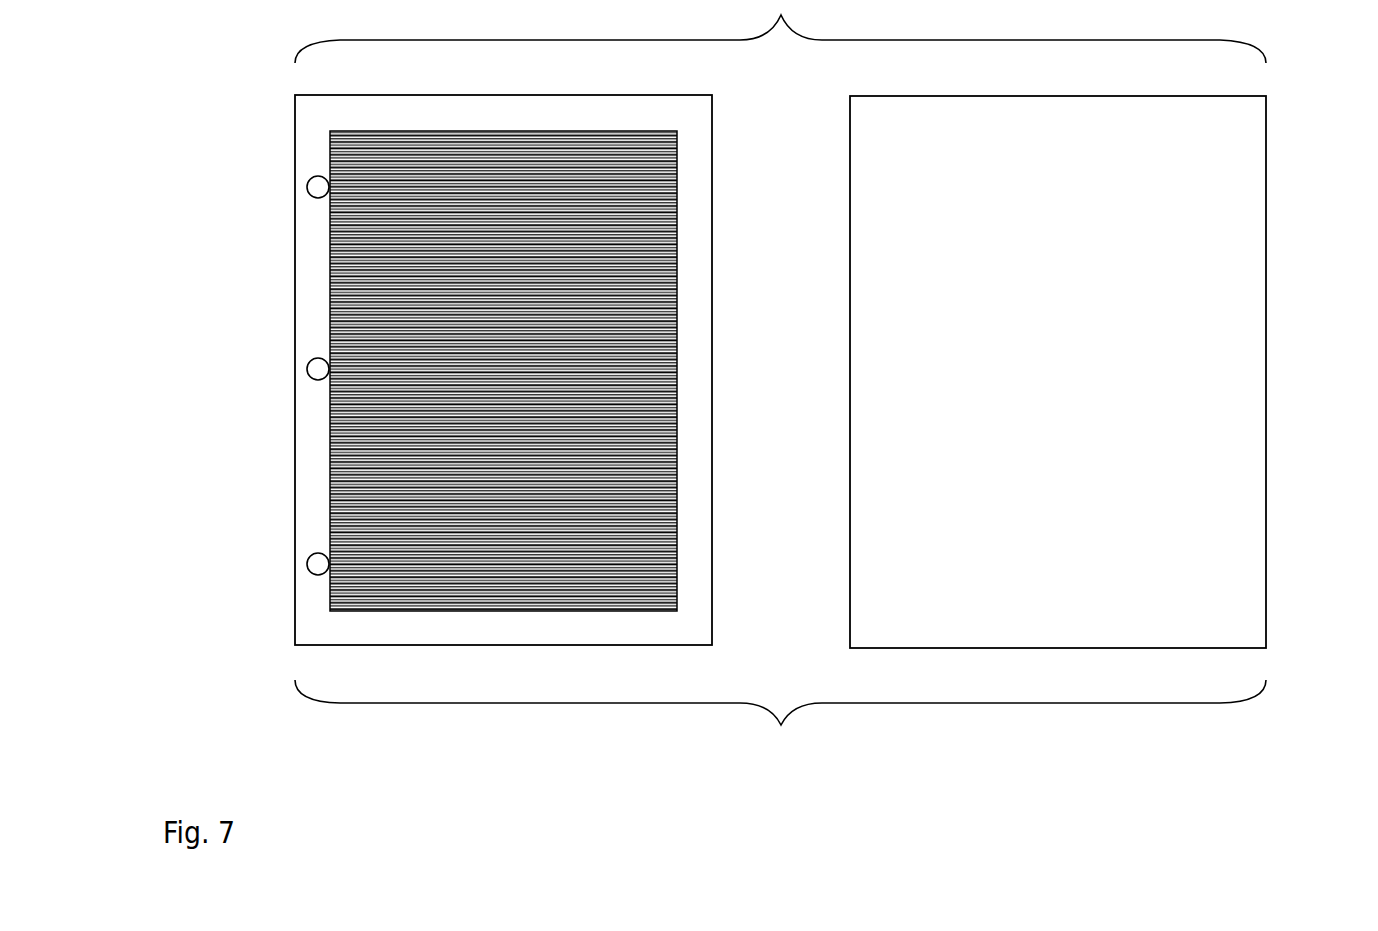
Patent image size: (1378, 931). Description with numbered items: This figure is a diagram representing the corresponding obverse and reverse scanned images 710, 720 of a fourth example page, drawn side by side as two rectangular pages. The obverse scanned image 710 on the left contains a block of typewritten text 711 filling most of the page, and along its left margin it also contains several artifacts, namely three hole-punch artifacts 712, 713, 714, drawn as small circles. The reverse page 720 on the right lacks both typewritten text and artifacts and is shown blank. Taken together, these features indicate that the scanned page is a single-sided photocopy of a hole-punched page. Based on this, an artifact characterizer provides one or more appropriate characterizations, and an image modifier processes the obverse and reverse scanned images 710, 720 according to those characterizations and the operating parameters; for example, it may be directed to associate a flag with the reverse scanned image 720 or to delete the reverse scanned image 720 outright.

The obverse scanned image 710 is at (712, 300).
The typewritten text 711 is at (678, 188).
The hole-punch artifact 712 is at (309, 181).
The hole-punch artifact 713 is at (309, 362).
The hole-punch artifact 714 is at (309, 557).
The reverse scanned image 720 is at (1266, 302).